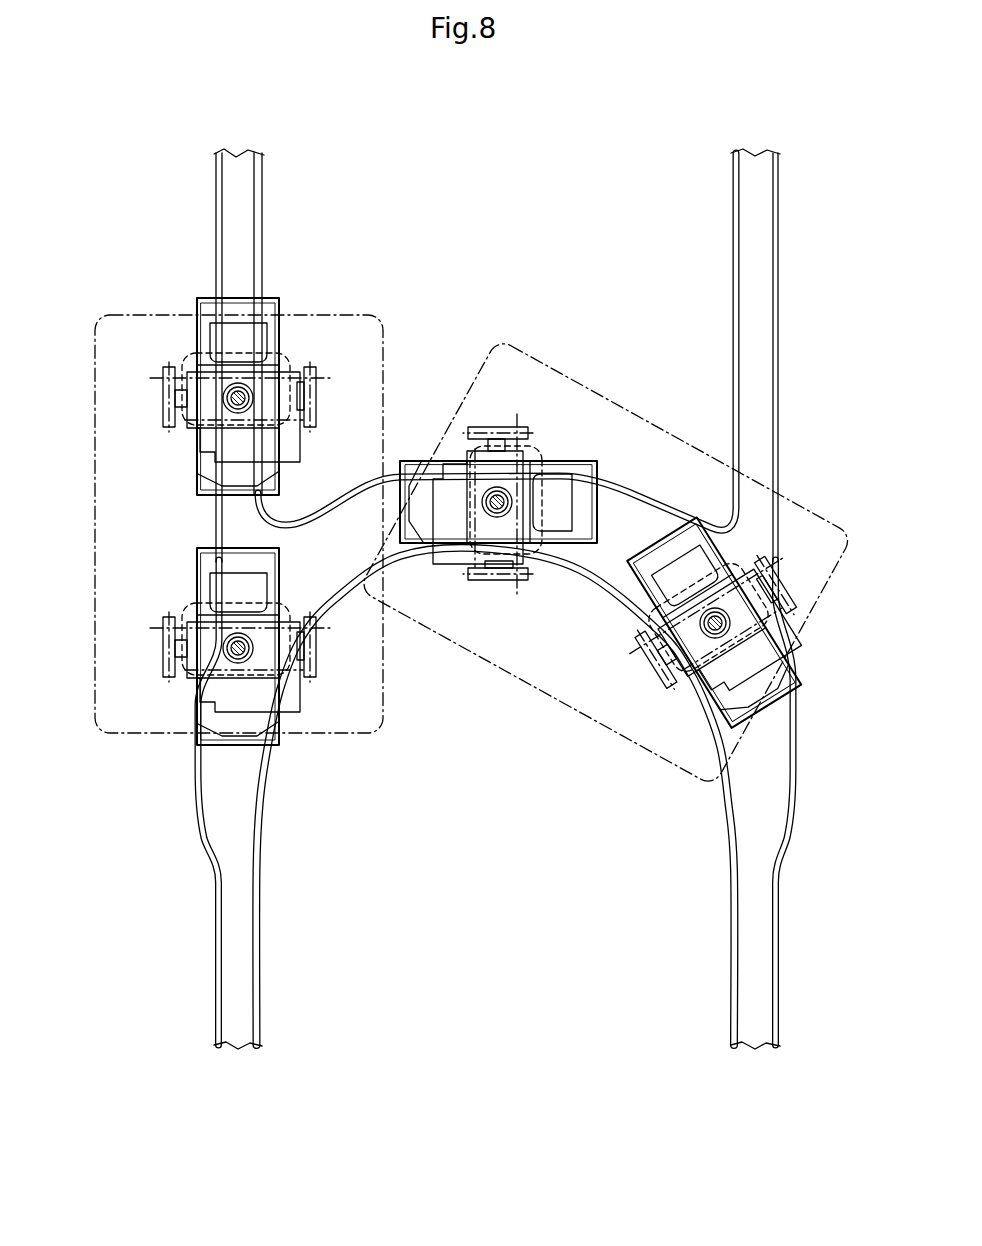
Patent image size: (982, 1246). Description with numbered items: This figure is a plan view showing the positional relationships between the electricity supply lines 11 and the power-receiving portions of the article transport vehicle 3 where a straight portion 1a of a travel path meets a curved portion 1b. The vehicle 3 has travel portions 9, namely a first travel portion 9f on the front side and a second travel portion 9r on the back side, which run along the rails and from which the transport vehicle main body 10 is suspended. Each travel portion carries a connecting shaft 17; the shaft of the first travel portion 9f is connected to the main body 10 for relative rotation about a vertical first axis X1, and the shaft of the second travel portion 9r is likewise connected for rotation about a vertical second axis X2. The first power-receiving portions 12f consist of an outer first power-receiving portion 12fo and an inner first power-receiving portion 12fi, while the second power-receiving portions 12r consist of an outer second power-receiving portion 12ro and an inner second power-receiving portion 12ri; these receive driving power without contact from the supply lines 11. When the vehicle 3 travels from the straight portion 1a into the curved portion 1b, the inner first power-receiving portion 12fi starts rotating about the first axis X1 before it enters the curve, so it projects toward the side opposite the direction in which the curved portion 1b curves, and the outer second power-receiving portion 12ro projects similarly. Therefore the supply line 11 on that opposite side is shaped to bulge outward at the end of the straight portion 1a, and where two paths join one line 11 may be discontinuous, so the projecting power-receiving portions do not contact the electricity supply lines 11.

The straight portion 1a is at (262, 944).
The curved portion 1b is at (365, 483).
The electricity supply line 11 is at (216, 213).
The transport vehicle main body 10 is at (824, 517).
The travel portion 9 is at (470, 534).
The first travel portion 9f is at (470, 534).
The second travel portion 9r is at (381, 535).
The first power-receiving portion 12f is at (470, 534).
The second power-receiving portion 12r is at (381, 546).
The outer first power-receiving portion 12fo is at (697, 812).
The inner first power-receiving portion 12fi is at (681, 560).
The outer second power-receiving portion 12ro is at (412, 485).
The inner second power-receiving portion 12ri is at (573, 490).
The connecting shaft 17 is at (246, 394).
The first axis X1 is at (228, 397).
The second axis X2 is at (228, 648).
The article transport vehicle 3 is at (391, 291).